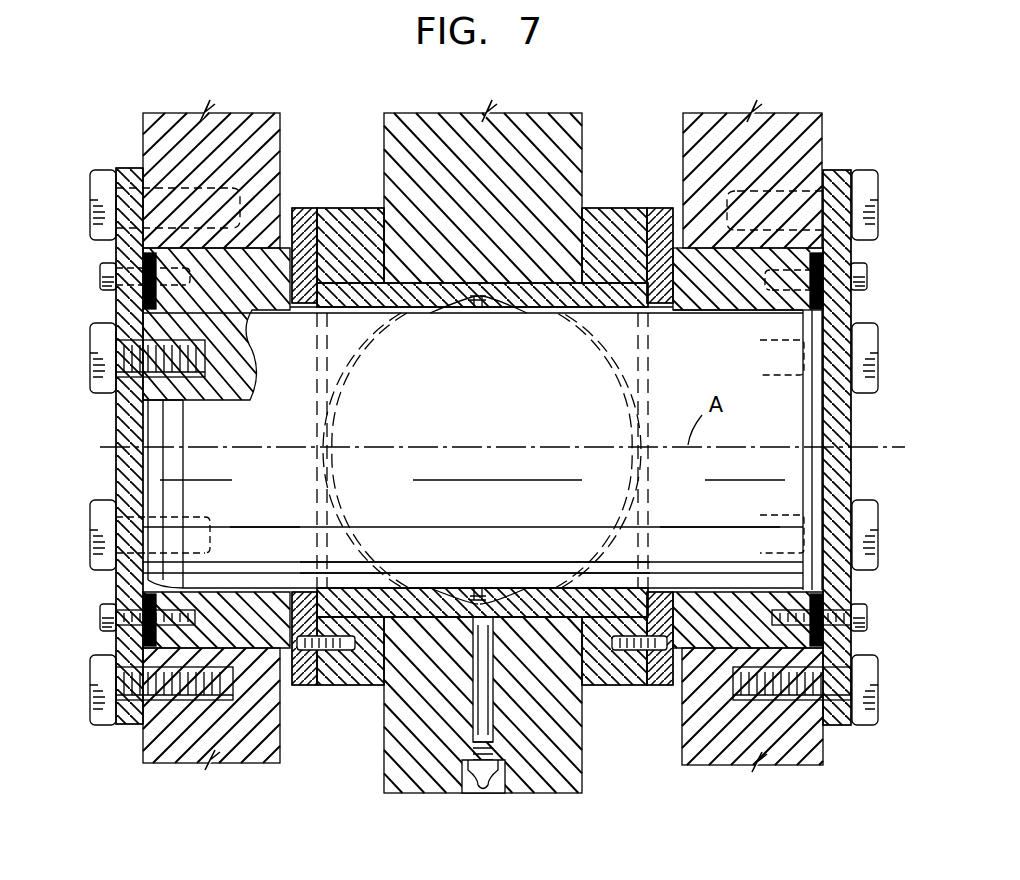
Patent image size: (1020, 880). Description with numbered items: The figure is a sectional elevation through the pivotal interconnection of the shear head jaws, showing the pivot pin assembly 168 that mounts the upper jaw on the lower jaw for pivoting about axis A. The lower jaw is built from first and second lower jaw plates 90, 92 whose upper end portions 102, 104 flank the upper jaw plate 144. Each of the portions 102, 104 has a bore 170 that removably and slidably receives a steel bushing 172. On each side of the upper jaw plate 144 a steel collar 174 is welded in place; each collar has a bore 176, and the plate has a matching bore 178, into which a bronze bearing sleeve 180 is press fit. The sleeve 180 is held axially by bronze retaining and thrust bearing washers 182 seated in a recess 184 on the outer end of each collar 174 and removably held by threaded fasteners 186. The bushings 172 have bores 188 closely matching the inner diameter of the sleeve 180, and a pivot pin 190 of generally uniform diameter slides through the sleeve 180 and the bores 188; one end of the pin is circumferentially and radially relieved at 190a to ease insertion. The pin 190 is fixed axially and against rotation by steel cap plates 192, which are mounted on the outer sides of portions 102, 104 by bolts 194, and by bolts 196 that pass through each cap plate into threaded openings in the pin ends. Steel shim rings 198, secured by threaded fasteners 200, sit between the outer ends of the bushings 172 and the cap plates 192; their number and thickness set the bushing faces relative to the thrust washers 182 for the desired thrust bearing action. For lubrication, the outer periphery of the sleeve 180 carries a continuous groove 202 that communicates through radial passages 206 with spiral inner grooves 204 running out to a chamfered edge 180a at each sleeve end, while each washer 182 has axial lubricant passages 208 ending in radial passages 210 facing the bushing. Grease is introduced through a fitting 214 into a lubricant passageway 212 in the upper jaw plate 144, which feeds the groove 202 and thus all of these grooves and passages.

The first lower jaw plate 90 is at (219, 764).
The second lower jaw plate 92 is at (770, 768).
The upper end portion of first lower jaw plate 102 is at (175, 132).
The upper end portion of second lower jaw plate 104 is at (765, 132).
The upper jaw plate 144 is at (527, 126).
The pivot pin assembly 168 is at (642, 108).
The bore 170 is at (100, 262).
The steel bushing 172 is at (215, 250).
The steel collar 174 is at (380, 700).
The collar bore 176 is at (350, 282).
The upper jaw plate bore 178 is at (420, 288).
The bronze bearing sleeve 180 is at (390, 586).
The chamfered edge 180a is at (345, 585).
The retaining and thrust bearing washer 182 is at (300, 688).
The recess 184 is at (302, 210).
The threaded fastener 186 is at (340, 652).
The bushing bore 188 is at (242, 585).
The pivot pin 190 is at (492, 412).
The relieved end of pivot pin 190a is at (160, 480).
The steel cap plate 192 is at (130, 722).
The bolt 194 is at (100, 190).
The bolt 196 is at (100, 520).
The steel shim ring 198 is at (100, 640).
The threaded fastener 200 is at (190, 705).
The lubricating groove 202 is at (460, 305).
The lubricating groove 204 is at (358, 368).
The radial passage 206 is at (490, 306).
The lubricant passage 208 is at (300, 313).
The radially extending passage 210 is at (250, 320).
The lubricant passageway 212 is at (498, 710).
The fitting 214 is at (470, 778).